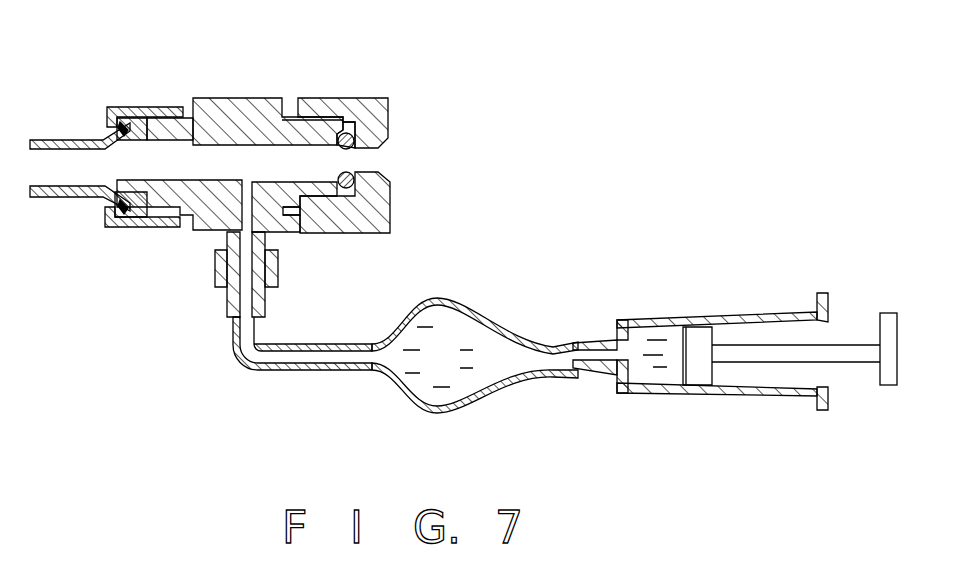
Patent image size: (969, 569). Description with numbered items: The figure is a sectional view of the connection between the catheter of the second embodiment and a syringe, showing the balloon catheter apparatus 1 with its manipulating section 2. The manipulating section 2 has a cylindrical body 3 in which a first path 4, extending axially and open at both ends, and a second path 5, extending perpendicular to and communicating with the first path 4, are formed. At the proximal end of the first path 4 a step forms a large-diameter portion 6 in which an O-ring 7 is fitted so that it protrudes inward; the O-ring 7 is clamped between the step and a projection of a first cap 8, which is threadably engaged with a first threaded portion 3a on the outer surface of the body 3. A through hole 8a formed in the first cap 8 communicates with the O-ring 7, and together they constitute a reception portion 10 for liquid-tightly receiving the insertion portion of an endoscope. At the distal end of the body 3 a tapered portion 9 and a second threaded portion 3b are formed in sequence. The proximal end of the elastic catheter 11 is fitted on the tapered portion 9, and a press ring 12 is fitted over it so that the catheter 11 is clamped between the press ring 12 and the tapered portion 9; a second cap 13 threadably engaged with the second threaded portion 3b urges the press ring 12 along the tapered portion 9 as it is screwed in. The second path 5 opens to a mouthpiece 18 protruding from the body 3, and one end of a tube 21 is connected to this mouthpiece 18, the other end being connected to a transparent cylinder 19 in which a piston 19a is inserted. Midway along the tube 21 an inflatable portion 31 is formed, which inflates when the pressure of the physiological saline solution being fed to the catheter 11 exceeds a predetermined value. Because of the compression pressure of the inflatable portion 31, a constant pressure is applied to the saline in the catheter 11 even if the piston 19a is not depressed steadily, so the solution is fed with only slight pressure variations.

The balloon catheter apparatus 1 is at (296, 80).
The manipulating section 2 is at (203, 243).
The body 3 is at (243, 103).
The first threaded portion 3a is at (290, 215).
The second threaded portion 3b is at (170, 110).
The first path 4 is at (185, 130).
The second path 5 is at (203, 232).
The large-diameter portion 6 is at (340, 137).
The O-ring 7 is at (352, 145).
The first cap 8 is at (389, 105).
The through hole 8a is at (386, 172).
The tapered portion 9 is at (137, 222).
The reception portion 10 is at (388, 160).
The catheter 11 is at (60, 138).
The press ring 12 is at (107, 215).
The second cap 13 is at (120, 107).
The mouthpiece 18 is at (272, 290).
The cylinder 19 is at (753, 311).
The piston 19a is at (692, 372).
The tube 21 is at (348, 373).
The inflatable portion 31 is at (477, 310).